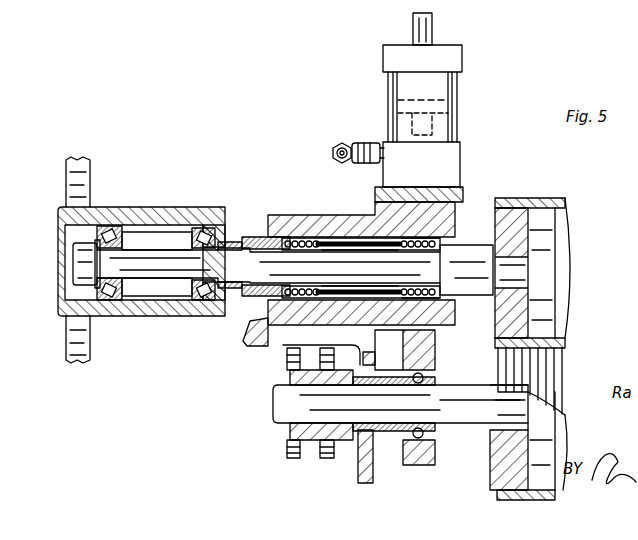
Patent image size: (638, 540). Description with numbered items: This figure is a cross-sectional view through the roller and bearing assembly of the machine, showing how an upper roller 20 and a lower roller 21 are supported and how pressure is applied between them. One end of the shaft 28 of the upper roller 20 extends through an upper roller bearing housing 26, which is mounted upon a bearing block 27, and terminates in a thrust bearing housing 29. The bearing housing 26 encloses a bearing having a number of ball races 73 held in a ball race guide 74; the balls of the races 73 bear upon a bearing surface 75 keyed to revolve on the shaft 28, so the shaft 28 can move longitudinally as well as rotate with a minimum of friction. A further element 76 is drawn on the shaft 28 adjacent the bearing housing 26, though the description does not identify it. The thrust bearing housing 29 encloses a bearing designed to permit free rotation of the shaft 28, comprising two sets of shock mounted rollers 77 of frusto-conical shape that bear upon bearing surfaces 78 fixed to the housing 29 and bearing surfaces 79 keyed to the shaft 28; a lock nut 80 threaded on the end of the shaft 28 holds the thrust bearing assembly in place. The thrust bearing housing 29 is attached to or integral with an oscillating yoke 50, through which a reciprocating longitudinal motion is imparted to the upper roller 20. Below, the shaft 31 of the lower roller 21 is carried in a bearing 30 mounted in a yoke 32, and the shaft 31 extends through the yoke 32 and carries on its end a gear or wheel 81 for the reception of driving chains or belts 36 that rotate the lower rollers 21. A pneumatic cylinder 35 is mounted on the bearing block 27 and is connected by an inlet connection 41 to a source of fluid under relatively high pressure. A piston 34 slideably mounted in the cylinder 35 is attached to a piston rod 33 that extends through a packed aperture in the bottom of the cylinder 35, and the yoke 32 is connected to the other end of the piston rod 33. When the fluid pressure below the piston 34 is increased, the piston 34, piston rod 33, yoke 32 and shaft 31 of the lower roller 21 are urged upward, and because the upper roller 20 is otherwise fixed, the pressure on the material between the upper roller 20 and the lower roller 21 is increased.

The upper roller 20 is at (535, 198).
The lower roller 21 is at (520, 500).
The bearing housing 26 is at (283, 215).
The bearing block 27 is at (458, 215).
The shaft 28 is at (484, 300).
The thrust bearing housing 29 is at (118, 207).
The bearing 30 is at (436, 437).
The shaft 31 is at (458, 385).
The yoke 32 is at (436, 345).
The piston rod 33 is at (432, 125).
The piston 34 is at (445, 100).
The pneumatic cylinder 35 is at (462, 50).
The driving chain or belt 36 is at (300, 458).
The inlet connection 41 is at (343, 143).
The oscillating yoke 50 is at (92, 172).
The ball race 73 is at (327, 249).
The ball race guide 74 is at (365, 250).
The bearing surface 75 is at (405, 246).
The sleeve 76 is at (275, 230).
The shock mounted roller 77 is at (130, 240).
The bearing surface 78 is at (203, 212).
The bearing surface 79 is at (130, 290).
The lock nut 80 is at (92, 300).
The gear or wheel 81 is at (292, 428).